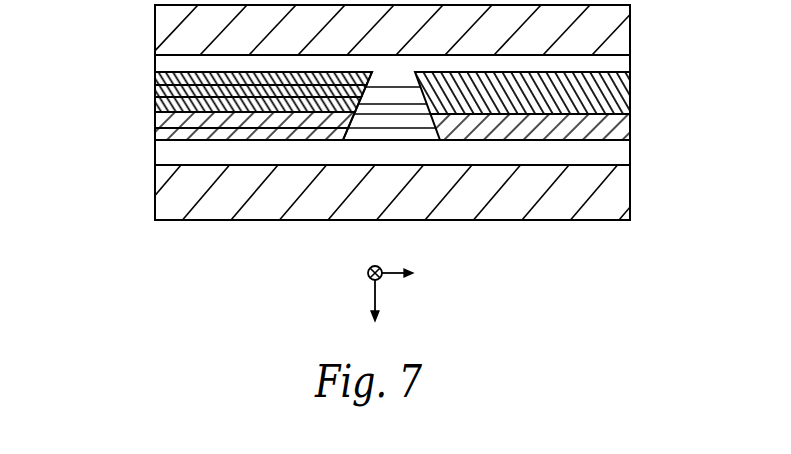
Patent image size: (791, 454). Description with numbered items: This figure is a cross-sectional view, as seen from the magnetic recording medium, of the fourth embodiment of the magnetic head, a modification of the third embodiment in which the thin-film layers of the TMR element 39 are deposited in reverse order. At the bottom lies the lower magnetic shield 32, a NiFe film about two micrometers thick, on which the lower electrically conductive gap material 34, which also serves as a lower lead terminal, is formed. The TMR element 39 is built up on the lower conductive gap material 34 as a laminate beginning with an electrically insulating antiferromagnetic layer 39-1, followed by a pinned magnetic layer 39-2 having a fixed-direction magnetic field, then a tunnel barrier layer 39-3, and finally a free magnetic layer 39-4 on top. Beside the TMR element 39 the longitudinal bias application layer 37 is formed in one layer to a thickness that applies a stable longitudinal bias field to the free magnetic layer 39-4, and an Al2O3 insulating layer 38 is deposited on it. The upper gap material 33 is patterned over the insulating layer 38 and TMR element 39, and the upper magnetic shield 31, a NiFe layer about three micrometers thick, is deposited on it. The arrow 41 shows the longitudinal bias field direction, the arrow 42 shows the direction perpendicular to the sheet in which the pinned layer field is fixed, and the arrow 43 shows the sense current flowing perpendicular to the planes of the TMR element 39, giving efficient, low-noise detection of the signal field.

The upper magnetic shield 31 is at (621, 36).
The lower magnetic shield 32 is at (621, 193).
The upper gap material 33 is at (621, 64).
The lower electrically conductive gap material 34 is at (621, 154).
The longitudinal bias application layer 37 is at (621, 124).
The insulating layer 38 is at (621, 96).
The TMR element 39 is at (205, 118).
The electrically insulating antiferromagnetic layer 39-1 is at (373, 136).
The pinned magnetic layer 39-2 is at (375, 125).
The tunnel barrier layer 39-3 is at (380, 107).
The free magnetic layer 39-4 is at (377, 90).
The arrow 41 is at (410, 274).
The arrow 42 is at (363, 260).
The arrow 43 is at (376, 316).